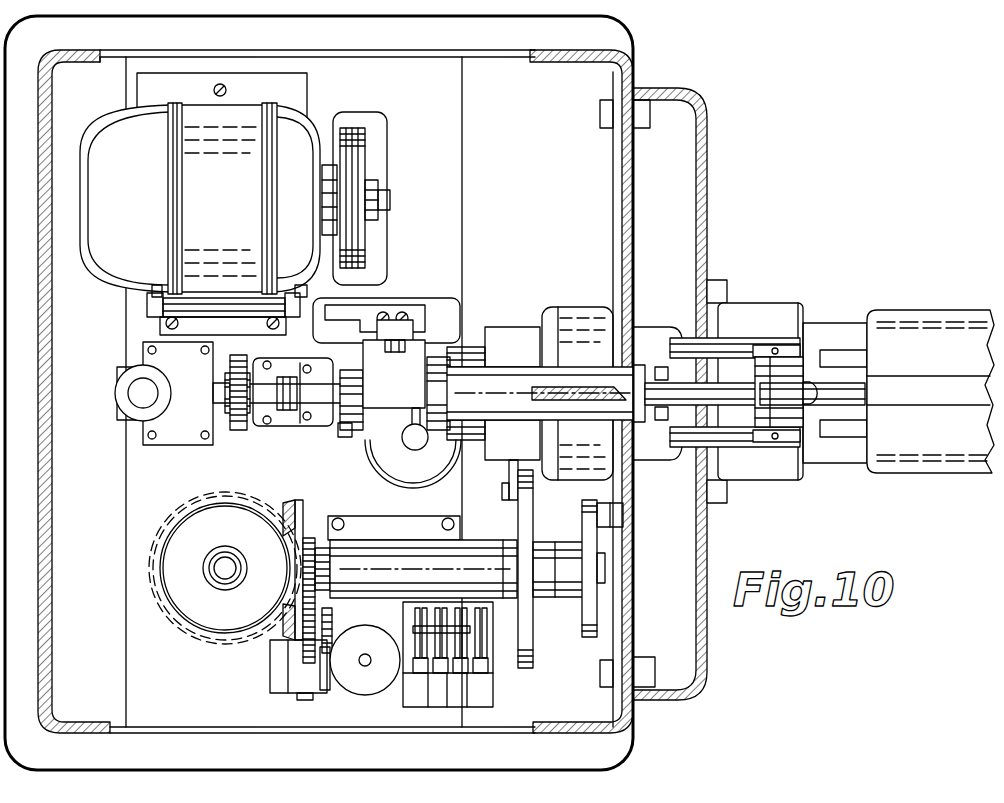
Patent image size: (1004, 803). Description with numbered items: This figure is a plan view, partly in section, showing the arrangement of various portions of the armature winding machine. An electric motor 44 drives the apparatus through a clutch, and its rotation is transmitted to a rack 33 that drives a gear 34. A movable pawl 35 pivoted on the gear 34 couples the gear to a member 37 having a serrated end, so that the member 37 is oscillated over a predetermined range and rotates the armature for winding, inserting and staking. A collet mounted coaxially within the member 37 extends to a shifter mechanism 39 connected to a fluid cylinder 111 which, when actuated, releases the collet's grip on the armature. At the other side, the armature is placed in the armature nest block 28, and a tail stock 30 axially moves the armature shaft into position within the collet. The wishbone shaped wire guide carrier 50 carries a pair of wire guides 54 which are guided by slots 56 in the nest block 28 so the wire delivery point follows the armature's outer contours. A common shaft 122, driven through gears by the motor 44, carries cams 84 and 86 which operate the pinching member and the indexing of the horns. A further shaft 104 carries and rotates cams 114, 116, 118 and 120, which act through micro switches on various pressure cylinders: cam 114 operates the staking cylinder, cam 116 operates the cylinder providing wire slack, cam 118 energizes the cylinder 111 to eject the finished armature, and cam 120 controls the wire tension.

The electric motor 44 is at (240, 118).
The fluid cylinder 111 is at (138, 413).
The shifter mechanism 39 is at (243, 418).
The member 37 is at (338, 423).
The movable pawl 35 is at (357, 431).
The gear 34 is at (418, 417).
The rack 33 is at (413, 435).
The shaft 104 is at (447, 627).
The cam 114 is at (418, 672).
The cam 116 is at (438, 672).
The cam 118 is at (458, 672).
The cam 120 is at (478, 642).
The cam 86 is at (528, 622).
The cam 84 is at (590, 637).
The common shaft 122 is at (563, 542).
The slots 56 is at (702, 340).
The wire guides 54 is at (763, 346).
The armature nest block 28 is at (787, 312).
The tail stock 30 is at (942, 337).
The wishbone shaped wire guide carrier 50 is at (790, 413).